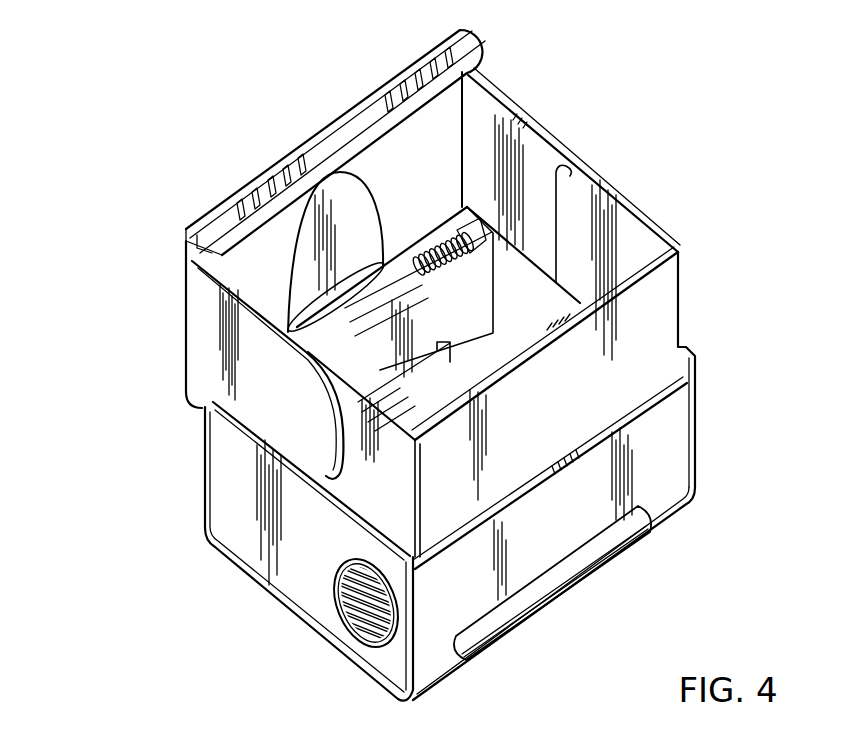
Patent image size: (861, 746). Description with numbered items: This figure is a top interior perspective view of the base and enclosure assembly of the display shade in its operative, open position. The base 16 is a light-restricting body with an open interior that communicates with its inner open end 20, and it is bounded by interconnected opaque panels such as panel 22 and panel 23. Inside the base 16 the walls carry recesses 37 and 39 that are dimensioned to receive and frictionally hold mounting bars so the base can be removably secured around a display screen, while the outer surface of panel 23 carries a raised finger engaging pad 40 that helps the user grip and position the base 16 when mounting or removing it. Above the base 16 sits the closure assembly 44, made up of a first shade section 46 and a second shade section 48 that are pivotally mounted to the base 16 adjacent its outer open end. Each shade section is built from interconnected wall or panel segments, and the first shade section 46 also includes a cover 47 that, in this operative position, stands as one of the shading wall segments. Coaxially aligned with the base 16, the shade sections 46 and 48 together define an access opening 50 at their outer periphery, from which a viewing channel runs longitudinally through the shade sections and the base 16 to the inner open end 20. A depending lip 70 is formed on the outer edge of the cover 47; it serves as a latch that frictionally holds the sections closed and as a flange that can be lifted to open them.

The base 16 is at (723, 422).
The inner open end 20 is at (233, 565).
The panel 22 is at (675, 475).
The panel 23 is at (380, 665).
The recess 37 is at (417, 380).
The recess 39 is at (580, 568).
The finger engaging pad 40 is at (323, 600).
The closure assembly 44 is at (152, 282).
The first shade section 46 is at (170, 328).
The cover 47 is at (447, 98).
The second shade section 48 is at (707, 267).
The access opening 50 is at (529, 224).
The depending lip 70 is at (277, 165).